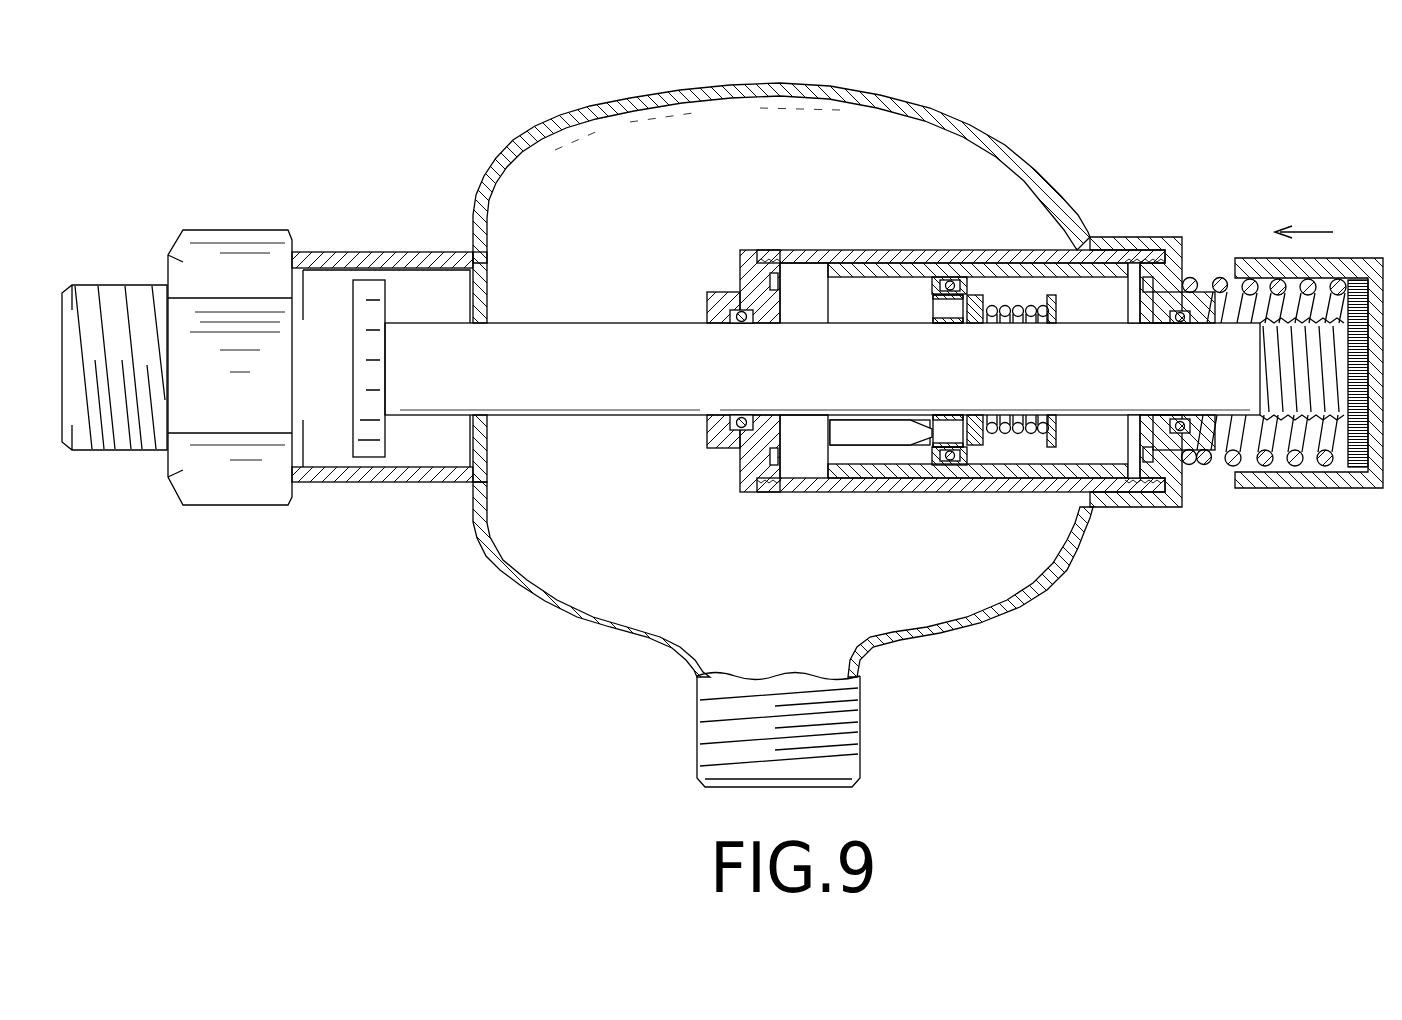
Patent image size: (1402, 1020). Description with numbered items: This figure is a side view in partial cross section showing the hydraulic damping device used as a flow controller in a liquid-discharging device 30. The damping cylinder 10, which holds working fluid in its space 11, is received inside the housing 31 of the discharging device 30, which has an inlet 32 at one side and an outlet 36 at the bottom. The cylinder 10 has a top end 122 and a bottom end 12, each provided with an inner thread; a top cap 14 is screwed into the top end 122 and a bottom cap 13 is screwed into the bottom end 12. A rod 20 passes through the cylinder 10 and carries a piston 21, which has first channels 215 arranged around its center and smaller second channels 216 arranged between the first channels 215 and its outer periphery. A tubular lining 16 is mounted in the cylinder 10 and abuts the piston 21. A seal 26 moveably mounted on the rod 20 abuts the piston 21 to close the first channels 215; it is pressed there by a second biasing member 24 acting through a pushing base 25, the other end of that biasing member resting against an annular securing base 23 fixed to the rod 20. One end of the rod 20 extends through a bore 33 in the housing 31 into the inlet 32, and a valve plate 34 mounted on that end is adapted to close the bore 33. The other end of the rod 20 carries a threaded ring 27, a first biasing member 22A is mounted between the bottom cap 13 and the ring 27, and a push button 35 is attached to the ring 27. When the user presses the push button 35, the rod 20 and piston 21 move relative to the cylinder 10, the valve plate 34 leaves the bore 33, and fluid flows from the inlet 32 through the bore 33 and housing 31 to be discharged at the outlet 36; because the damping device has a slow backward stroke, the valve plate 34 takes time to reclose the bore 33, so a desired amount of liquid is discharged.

The liquid-discharging device 30 is at (902, 90).
The housing 31 is at (580, 578).
The outlet 36 is at (828, 664).
The inlet 32 is at (322, 463).
The bore 33 is at (477, 430).
The valve plate 34 is at (362, 315).
The rod 20 is at (591, 316).
The cylinder 10 is at (810, 250).
The top cap 14 is at (748, 290).
The top end 122 is at (763, 470).
The piston 21 is at (940, 290).
The second channels 216 is at (934, 284).
The first channels 215 is at (933, 303).
The seal 26 is at (970, 298).
The pushing base 25 is at (978, 452).
The second biasing member 24 is at (1025, 440).
The tubular lining 16 is at (848, 452).
The space 11 is at (873, 458).
The securing base 23 is at (1050, 437).
The bottom cap 13 is at (1155, 474).
The bottom end 12 is at (1180, 478).
The first biasing member 22A is at (1217, 290).
The push button 35 is at (1295, 482).
The ring 27 is at (1360, 455).